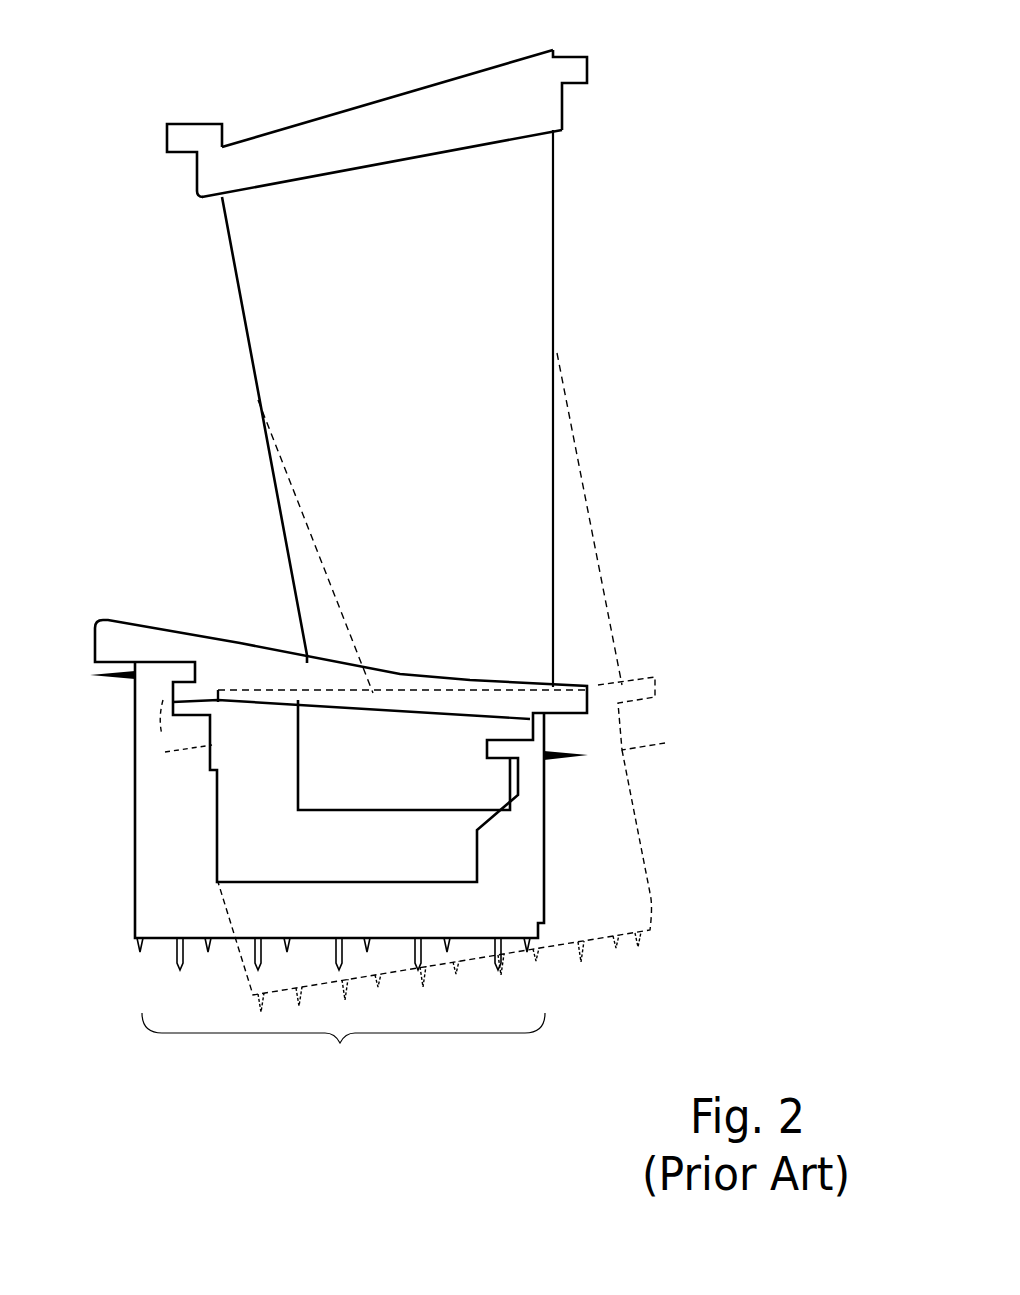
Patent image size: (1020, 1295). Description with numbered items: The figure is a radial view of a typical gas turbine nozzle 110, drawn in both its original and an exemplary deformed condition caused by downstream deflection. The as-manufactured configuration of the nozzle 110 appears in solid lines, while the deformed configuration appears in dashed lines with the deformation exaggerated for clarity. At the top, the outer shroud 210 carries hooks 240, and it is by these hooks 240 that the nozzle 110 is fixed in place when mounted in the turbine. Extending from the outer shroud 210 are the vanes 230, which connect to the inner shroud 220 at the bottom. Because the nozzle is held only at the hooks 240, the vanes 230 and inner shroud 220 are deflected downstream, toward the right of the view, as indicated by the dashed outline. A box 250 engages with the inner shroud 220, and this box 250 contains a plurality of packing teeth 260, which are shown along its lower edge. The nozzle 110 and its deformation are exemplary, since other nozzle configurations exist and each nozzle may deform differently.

The nozzle 110 is at (673, 100).
The outer shroud 210 is at (362, 149).
The inner shroud 220 is at (246, 675).
The vanes 230 is at (420, 374).
The hooks 240 is at (197, 137).
The box 250 is at (197, 909).
The packing teeth 260 is at (343, 1049).